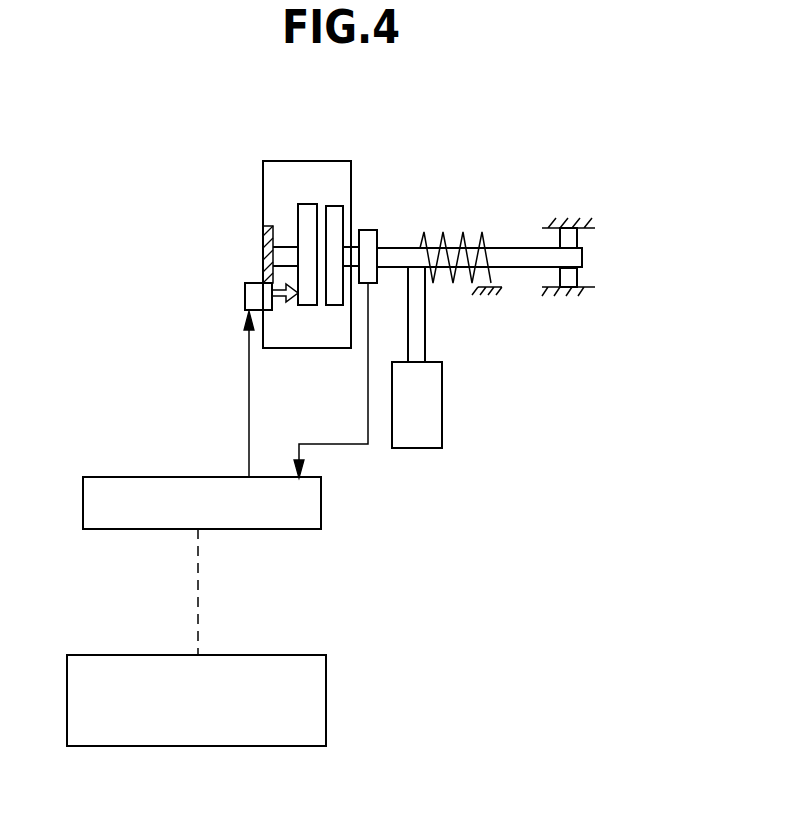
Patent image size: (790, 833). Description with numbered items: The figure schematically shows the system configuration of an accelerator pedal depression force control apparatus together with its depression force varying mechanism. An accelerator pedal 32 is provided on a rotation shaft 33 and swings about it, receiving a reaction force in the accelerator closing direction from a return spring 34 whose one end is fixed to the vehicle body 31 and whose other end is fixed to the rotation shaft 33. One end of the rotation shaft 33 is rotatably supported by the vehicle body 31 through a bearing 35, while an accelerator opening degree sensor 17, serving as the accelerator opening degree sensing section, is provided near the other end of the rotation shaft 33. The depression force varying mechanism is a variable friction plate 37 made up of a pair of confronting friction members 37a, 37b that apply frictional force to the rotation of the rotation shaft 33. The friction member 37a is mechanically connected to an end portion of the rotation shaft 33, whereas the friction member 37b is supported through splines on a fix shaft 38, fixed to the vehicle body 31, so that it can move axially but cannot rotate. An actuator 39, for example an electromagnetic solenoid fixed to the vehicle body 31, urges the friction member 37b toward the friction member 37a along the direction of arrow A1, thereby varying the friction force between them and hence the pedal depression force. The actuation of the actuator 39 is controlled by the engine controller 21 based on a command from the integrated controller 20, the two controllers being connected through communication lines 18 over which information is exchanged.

The accelerator opening degree sensor 17 is at (366, 229).
The communication lines 18 is at (198, 607).
The integrated controller 20 is at (326, 703).
The engine controller 21 is at (321, 507).
The vehicle body 31 is at (262, 240).
The accelerator pedal 32 is at (439, 350).
The rotation shaft 33 is at (518, 255).
The return spring 34 is at (447, 233).
The bearing 35 is at (578, 277).
The variable friction plate 37 is at (323, 349).
The friction member 37a is at (337, 206).
The friction member 37b is at (310, 203).
The fix shaft 38 is at (286, 249).
The actuator 39 is at (246, 300).
The arrow A1 is at (280, 298).